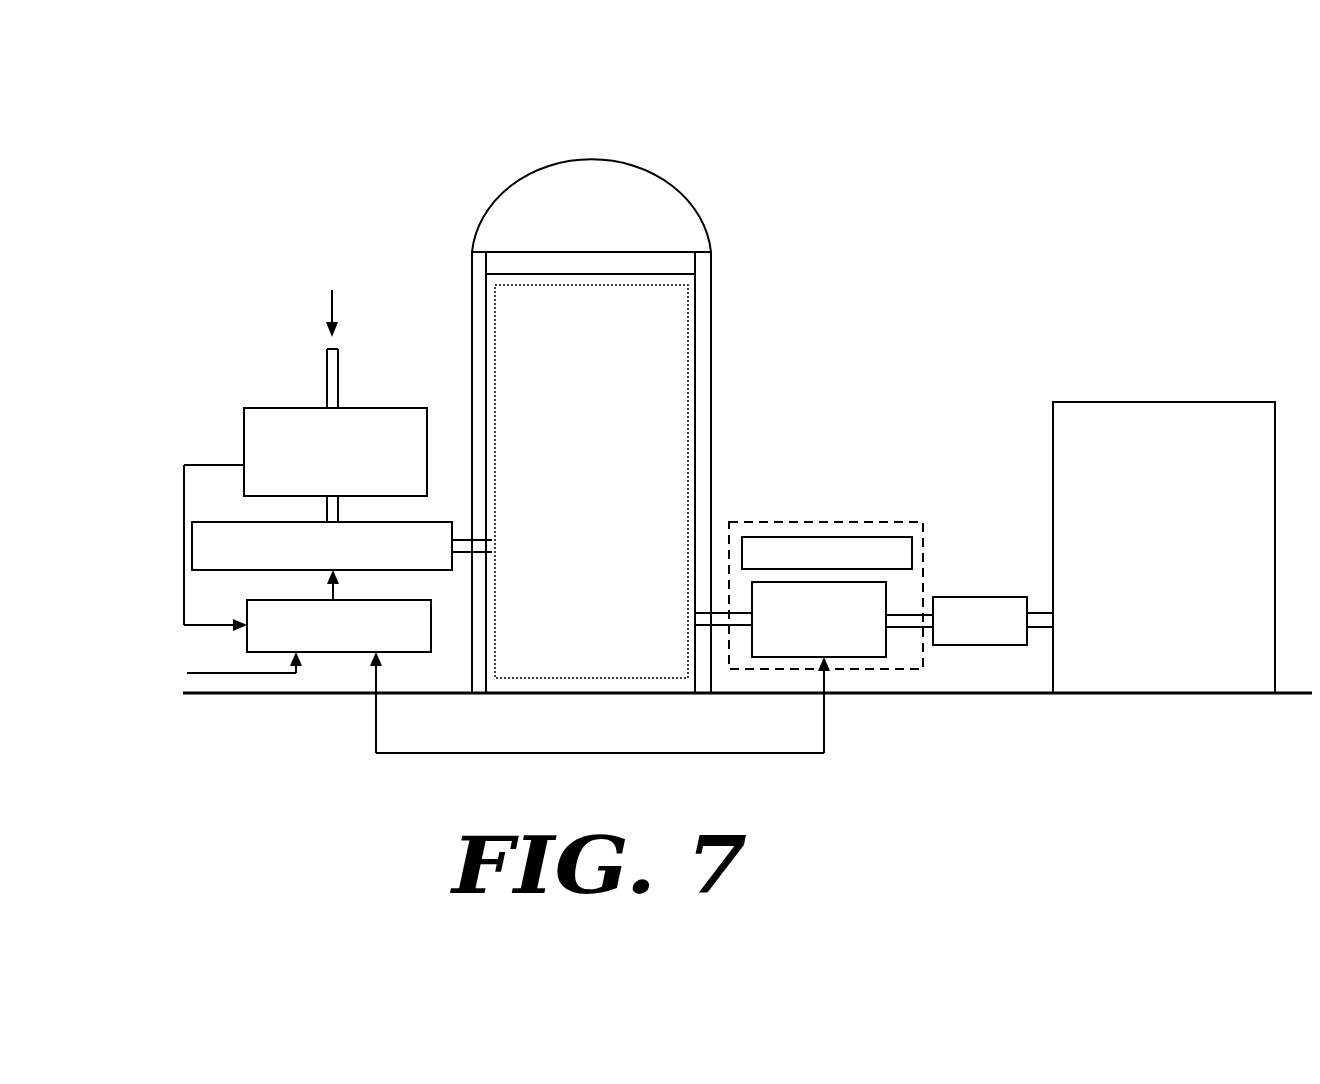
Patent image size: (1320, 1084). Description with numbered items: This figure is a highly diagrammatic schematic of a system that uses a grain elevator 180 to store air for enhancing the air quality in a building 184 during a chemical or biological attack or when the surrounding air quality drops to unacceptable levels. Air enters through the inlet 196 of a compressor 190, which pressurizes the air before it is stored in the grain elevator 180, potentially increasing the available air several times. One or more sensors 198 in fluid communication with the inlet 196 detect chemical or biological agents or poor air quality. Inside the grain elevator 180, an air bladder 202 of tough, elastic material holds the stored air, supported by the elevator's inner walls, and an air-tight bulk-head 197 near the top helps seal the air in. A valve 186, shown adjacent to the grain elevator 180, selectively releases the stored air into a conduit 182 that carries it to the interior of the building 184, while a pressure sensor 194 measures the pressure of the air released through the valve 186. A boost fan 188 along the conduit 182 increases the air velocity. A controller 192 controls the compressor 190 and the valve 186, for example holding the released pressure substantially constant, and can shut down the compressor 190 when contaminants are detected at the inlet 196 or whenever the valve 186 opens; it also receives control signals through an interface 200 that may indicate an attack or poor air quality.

The grain elevator 180 is at (846, 110).
The conduit 182 is at (927, 630).
The building 184 is at (1139, 420).
The valve 186 is at (810, 657).
The boost fan 188 is at (987, 620).
The compressor 190 is at (197, 540).
The controller 192 is at (341, 652).
The pressure sensor 194 is at (752, 548).
The inlet 196 is at (333, 378).
The air-tight bulk-head 197 is at (522, 263).
The sensors 198 is at (258, 416).
The interface 200 is at (207, 675).
The air bladder 202 is at (688, 343).